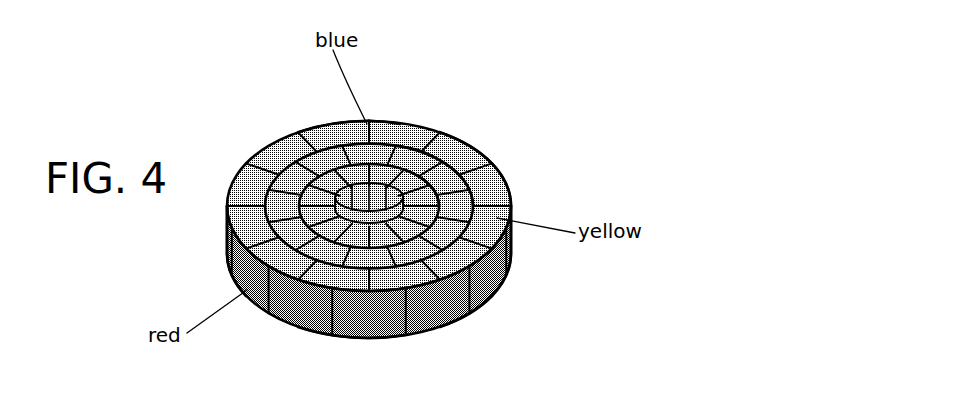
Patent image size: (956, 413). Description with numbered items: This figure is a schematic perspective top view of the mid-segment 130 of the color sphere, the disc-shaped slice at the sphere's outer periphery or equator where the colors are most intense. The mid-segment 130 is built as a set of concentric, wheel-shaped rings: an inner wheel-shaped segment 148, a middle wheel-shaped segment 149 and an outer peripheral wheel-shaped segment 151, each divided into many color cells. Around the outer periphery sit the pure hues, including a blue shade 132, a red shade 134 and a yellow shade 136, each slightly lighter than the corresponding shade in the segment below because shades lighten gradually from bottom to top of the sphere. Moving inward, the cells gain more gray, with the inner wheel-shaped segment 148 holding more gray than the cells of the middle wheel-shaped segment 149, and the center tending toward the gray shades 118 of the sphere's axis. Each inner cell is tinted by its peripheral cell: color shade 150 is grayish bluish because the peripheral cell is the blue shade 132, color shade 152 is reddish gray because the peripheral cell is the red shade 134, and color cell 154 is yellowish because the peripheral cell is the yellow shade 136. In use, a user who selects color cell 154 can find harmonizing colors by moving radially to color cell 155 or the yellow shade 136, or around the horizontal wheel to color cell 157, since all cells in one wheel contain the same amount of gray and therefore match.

The mid-segment 130 is at (512, 113).
The color shade 150 is at (325, 127).
The blue shade 132 is at (381, 123).
The inner wheel-shaped segment 148 is at (405, 148).
The middle wheel-shaped segment 149 is at (432, 160).
The outer peripheral wheel-shaped segment 151 is at (455, 158).
The color cell 154 is at (470, 176).
The color cell 155 is at (486, 190).
The yellow shade 136 is at (505, 207).
The gray shades 118 is at (509, 259).
The color cell 157 is at (474, 305).
The color shade 152 is at (338, 336).
The red shade 134 is at (234, 264).